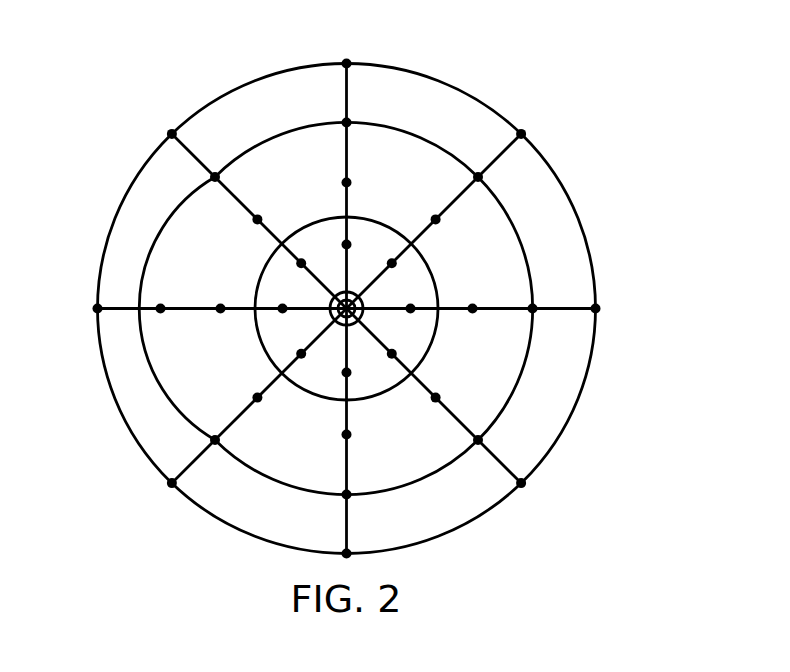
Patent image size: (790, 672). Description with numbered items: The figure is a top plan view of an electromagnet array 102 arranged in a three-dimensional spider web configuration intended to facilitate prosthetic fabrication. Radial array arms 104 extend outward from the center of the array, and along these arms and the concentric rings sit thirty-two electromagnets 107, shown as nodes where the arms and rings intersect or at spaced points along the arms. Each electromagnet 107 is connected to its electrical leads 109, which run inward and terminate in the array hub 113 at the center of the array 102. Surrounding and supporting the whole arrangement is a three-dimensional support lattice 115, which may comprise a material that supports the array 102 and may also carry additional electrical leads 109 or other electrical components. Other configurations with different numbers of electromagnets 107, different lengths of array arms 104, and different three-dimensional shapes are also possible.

The electromagnet array 102 is at (100, 90).
The array arm 104 is at (349, 473).
The electromagnet 107 is at (348, 63).
The electrical lead 109 is at (568, 310).
The array hub 113 is at (365, 316).
The three-dimensional support lattice 115 is at (592, 255).